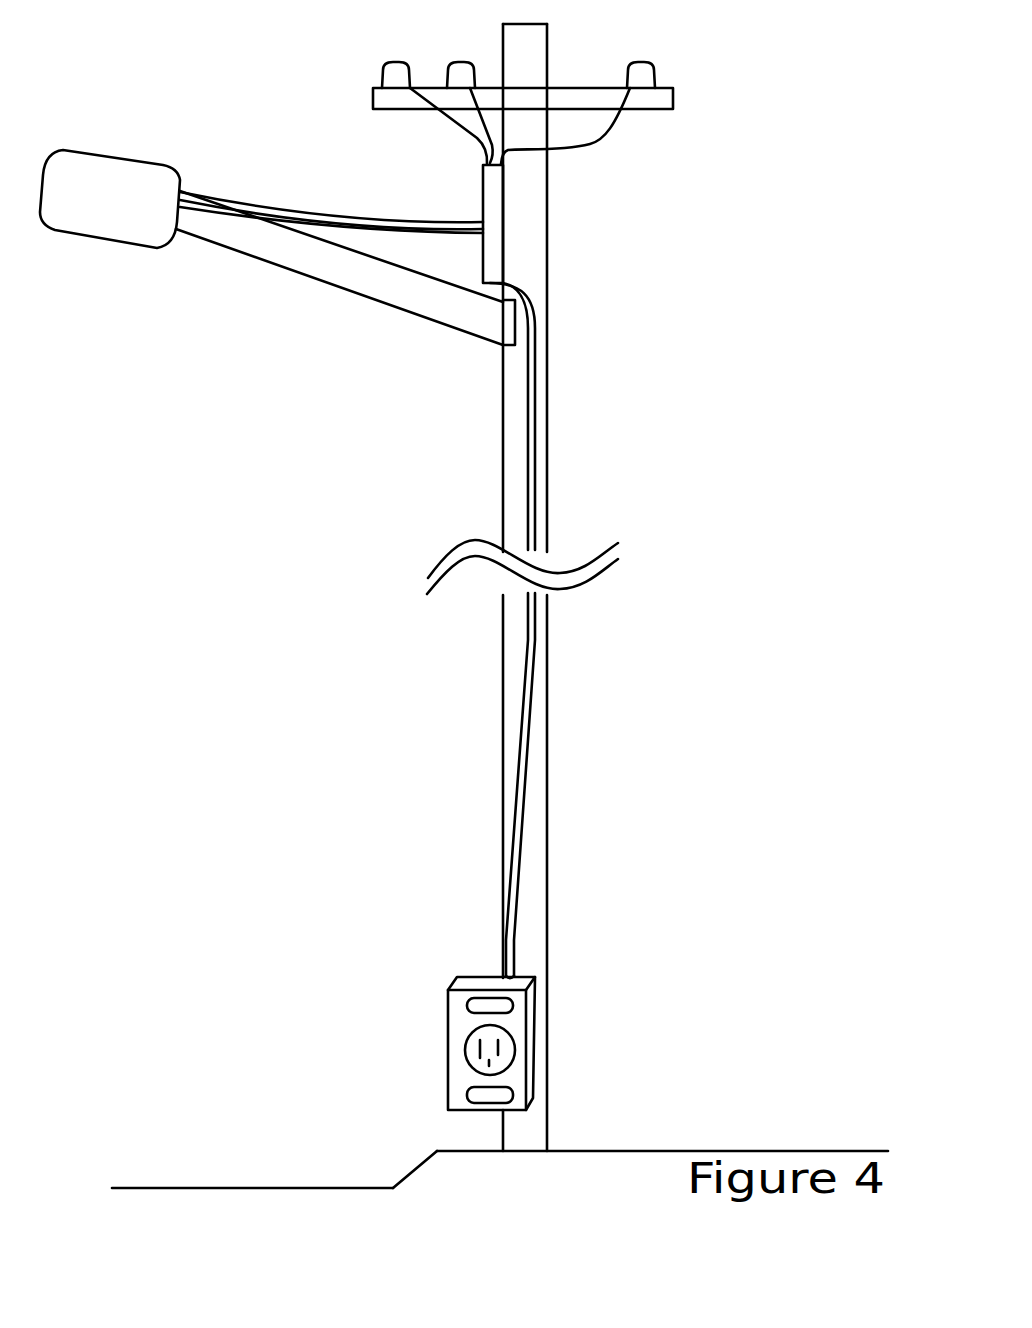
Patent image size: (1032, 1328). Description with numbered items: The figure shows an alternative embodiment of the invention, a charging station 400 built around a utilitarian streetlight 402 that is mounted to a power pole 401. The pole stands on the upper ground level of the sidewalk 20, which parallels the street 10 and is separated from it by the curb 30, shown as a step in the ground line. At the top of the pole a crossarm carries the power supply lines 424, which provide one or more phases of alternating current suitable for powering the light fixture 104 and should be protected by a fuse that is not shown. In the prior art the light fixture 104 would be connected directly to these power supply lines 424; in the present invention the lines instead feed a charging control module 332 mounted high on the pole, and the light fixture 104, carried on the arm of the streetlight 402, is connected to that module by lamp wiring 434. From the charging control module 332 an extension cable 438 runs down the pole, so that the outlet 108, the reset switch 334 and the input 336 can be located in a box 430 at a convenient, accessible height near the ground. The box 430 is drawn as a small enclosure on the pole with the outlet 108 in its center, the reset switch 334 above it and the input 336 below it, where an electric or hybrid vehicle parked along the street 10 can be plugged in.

The street 10 is at (236, 1187).
The sidewalk 20 is at (615, 1152).
The curb 30 is at (410, 1170).
The light fixture 104 is at (140, 243).
The outlet 108 is at (467, 1042).
The charging control module 332 is at (483, 208).
The reset switch 334 is at (467, 1005).
The input 336 is at (467, 1094).
The charging station 400 is at (464, 606).
The power pole 401 is at (500, 393).
The utilitarian streetlight 402 is at (392, 306).
The power supply lines 424 is at (455, 123).
The box 430 is at (463, 1016).
The lamp wiring 434 is at (358, 216).
The extension cable 438 is at (530, 455).